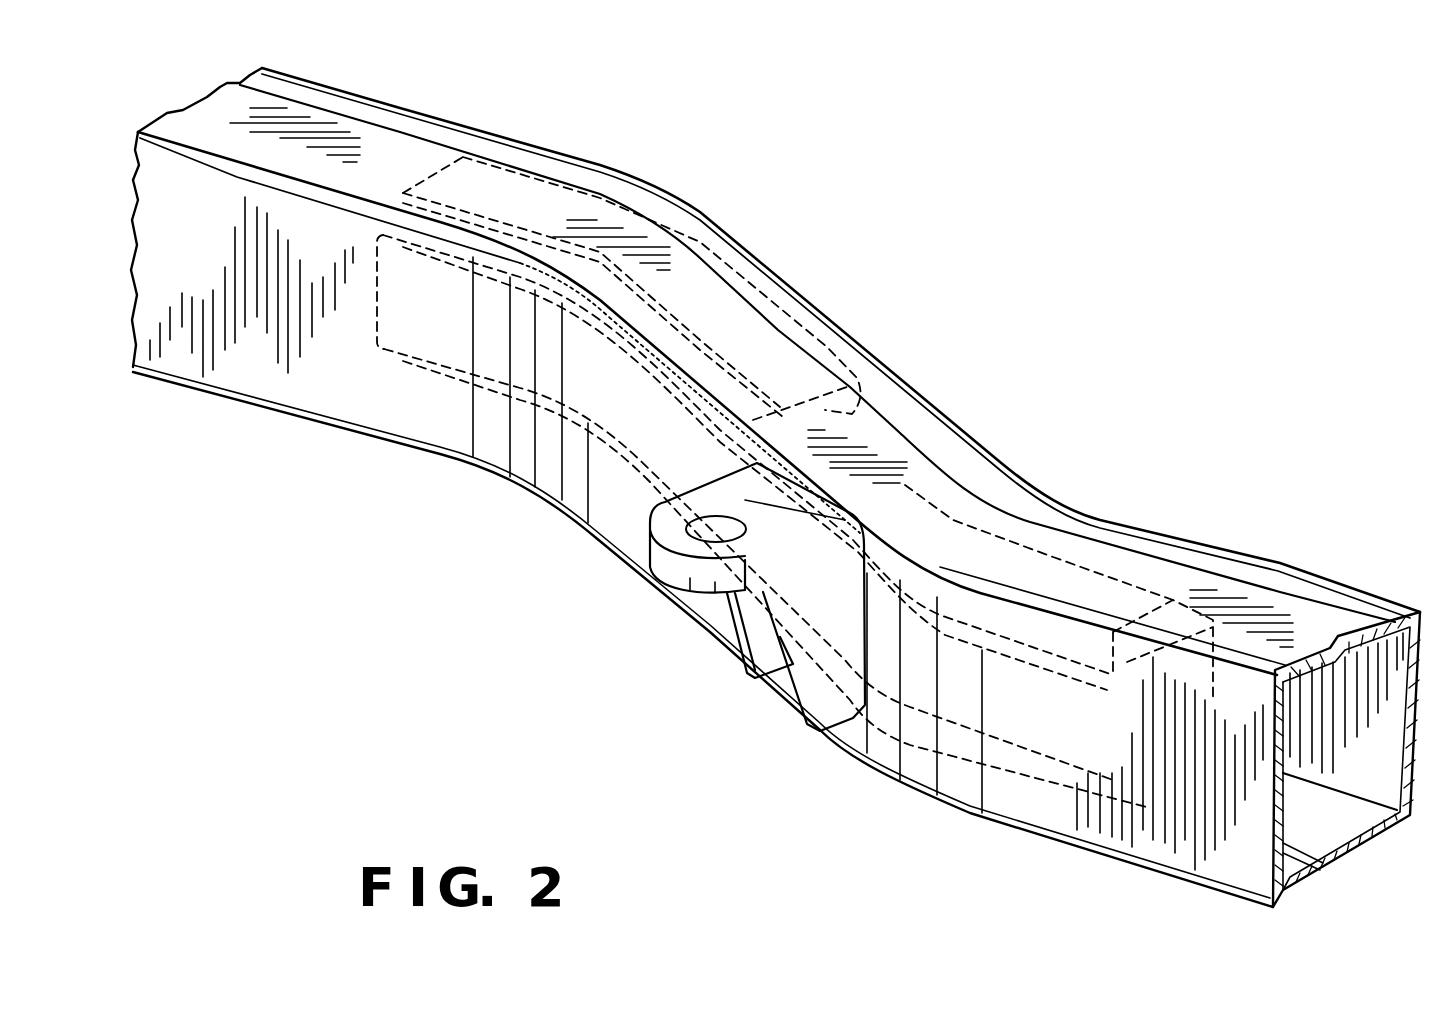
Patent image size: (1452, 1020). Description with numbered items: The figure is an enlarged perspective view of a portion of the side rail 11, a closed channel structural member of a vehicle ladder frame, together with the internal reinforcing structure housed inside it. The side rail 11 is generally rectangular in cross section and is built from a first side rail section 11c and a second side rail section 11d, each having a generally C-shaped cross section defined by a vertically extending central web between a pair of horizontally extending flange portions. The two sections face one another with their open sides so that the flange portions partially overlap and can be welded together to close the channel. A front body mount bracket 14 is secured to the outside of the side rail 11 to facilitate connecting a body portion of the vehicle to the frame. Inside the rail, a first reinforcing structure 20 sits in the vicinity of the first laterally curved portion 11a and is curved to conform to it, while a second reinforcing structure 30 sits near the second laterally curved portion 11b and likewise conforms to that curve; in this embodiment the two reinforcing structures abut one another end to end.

The side rail 11 is at (771, 488).
The first laterally curved portion 11a is at (484, 497).
The second laterally curved portion 11b is at (1072, 465).
The first side rail section 11c is at (255, 358).
The second side rail section 11d is at (425, 131).
The front body mount bracket 14 is at (822, 634).
The first reinforcing structure 20 is at (707, 292).
The second reinforcing structure 30 is at (1030, 740).